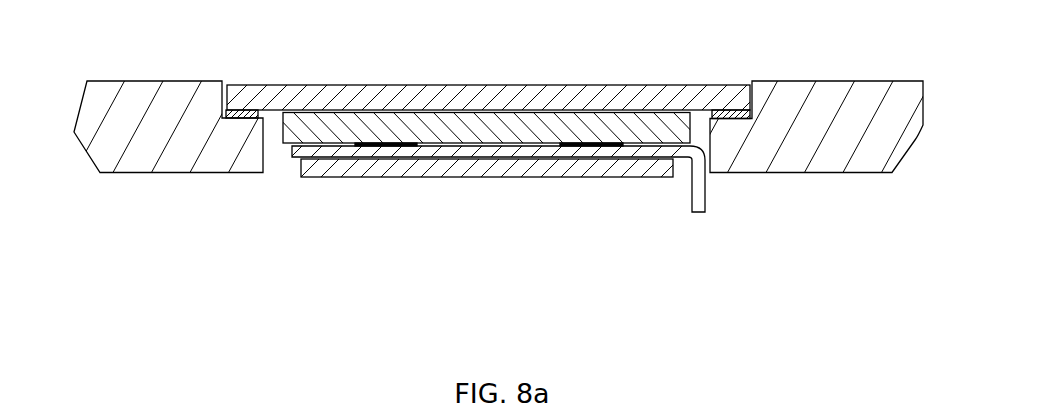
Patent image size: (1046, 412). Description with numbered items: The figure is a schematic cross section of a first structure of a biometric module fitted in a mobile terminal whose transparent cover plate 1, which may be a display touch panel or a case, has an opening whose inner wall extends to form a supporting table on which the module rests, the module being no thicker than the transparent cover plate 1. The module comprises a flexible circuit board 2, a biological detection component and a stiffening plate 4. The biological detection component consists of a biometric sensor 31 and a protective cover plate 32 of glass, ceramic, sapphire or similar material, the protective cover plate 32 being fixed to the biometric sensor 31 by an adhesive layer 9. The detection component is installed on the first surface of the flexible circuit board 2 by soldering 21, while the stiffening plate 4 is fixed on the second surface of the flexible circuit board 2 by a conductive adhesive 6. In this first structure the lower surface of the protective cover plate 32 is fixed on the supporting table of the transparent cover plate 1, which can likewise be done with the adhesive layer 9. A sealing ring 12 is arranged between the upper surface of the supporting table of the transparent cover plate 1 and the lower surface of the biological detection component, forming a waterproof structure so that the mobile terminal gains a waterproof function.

The transparent cover plate 1 is at (188, 88).
The flexible circuit board 2 is at (488, 213).
The stiffening plate 4 is at (598, 158).
The conductive adhesive 6 is at (482, 160).
The adhesive layer 9 is at (537, 105).
The sealing ring 12 is at (733, 117).
The soldering 21 is at (393, 147).
The biometric sensor 31 is at (650, 122).
The protective cover plate 32 is at (484, 62).